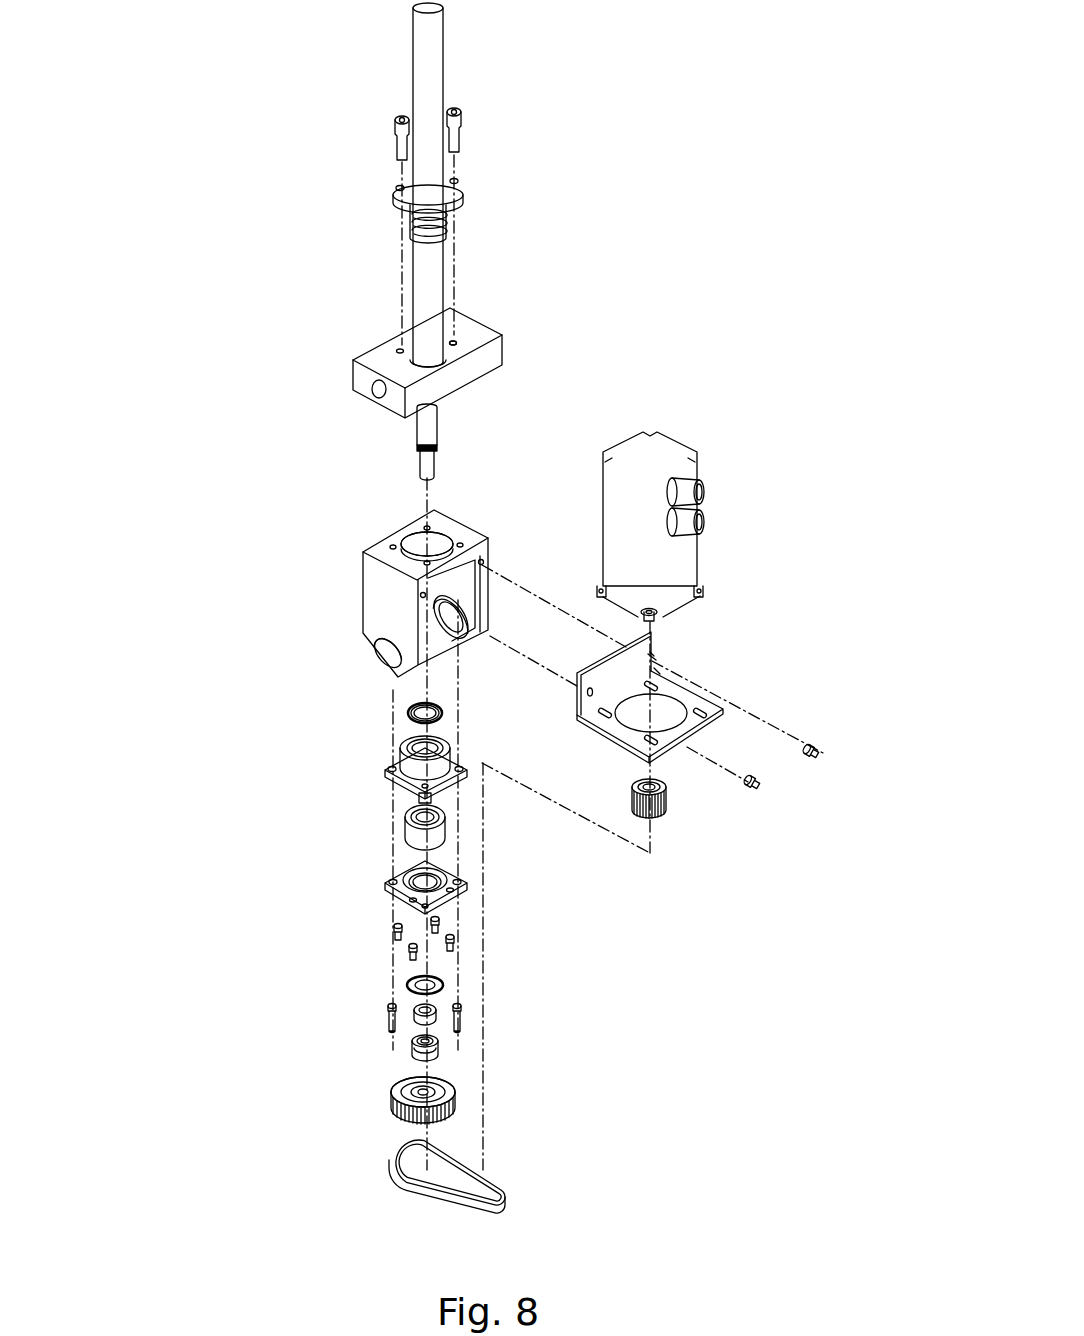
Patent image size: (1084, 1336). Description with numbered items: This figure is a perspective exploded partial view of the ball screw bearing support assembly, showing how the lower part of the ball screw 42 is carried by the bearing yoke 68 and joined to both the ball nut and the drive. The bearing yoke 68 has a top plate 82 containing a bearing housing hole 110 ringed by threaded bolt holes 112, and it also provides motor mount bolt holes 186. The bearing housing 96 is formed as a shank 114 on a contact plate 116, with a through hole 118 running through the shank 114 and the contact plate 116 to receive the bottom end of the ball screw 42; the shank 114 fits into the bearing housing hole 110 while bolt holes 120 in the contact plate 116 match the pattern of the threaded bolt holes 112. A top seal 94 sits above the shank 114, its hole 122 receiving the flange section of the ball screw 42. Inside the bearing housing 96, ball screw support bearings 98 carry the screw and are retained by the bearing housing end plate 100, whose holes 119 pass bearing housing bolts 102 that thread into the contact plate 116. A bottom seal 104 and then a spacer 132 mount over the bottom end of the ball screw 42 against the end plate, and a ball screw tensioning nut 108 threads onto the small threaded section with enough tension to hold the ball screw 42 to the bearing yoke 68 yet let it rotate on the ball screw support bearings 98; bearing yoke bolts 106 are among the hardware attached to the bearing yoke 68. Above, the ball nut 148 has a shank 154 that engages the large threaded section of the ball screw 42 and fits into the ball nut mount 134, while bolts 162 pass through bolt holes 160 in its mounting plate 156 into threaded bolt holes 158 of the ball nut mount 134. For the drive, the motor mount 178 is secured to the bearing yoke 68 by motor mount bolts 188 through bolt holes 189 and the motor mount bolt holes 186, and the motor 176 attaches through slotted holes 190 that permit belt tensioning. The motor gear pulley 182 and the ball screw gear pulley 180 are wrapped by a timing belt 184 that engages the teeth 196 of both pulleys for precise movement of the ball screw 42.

The ball screw 42 is at (428, 60).
The bolts 162 is at (395, 143).
The bolt holes 160 is at (396, 186).
The mounting plate 156 is at (410, 200).
The ball nut 148 is at (457, 199).
The shank 154 is at (410, 225).
The threaded bolt holes 158 is at (500, 327).
The ball nut mount 134 is at (355, 380).
The bearing housing hole 110 is at (432, 552).
The top plate 82 is at (455, 528).
The threaded bolt holes 112 is at (425, 527).
The motor mount bolt holes 186 is at (483, 562).
The bearing yoke 68 is at (306, 641).
The hole 122 is at (408, 713).
The top seal 94 is at (443, 712).
The through hole 118 is at (400, 752).
The shank 114 is at (435, 768).
The contact plate 116 is at (452, 787).
The bearing housing 96 is at (360, 789).
The ball screw support bearings 98 is at (412, 842).
The bolt holes 120 is at (396, 881).
The holes 119 is at (453, 891).
The bearing housing end plate 100 is at (360, 909).
The bearing housing bolts 102 is at (391, 960).
The bottom seal 104 is at (392, 1012).
The bearing yoke bolts 106 is at (461, 1018).
The spacer 132 is at (418, 1020).
The ball screw tensioning nut 108 is at (438, 1050).
The teeth 196 is at (395, 1100).
The ball screw gear pulley 180 is at (473, 1113).
The timing belt 184 is at (505, 1200).
The motor 176 is at (700, 555).
The bolt holes 189 is at (657, 613).
The motor mount 178 is at (725, 712).
The slotted holes 190 is at (660, 683).
The motor mount bolts 188 is at (822, 750).
The motor gear pulley 182 is at (718, 828).